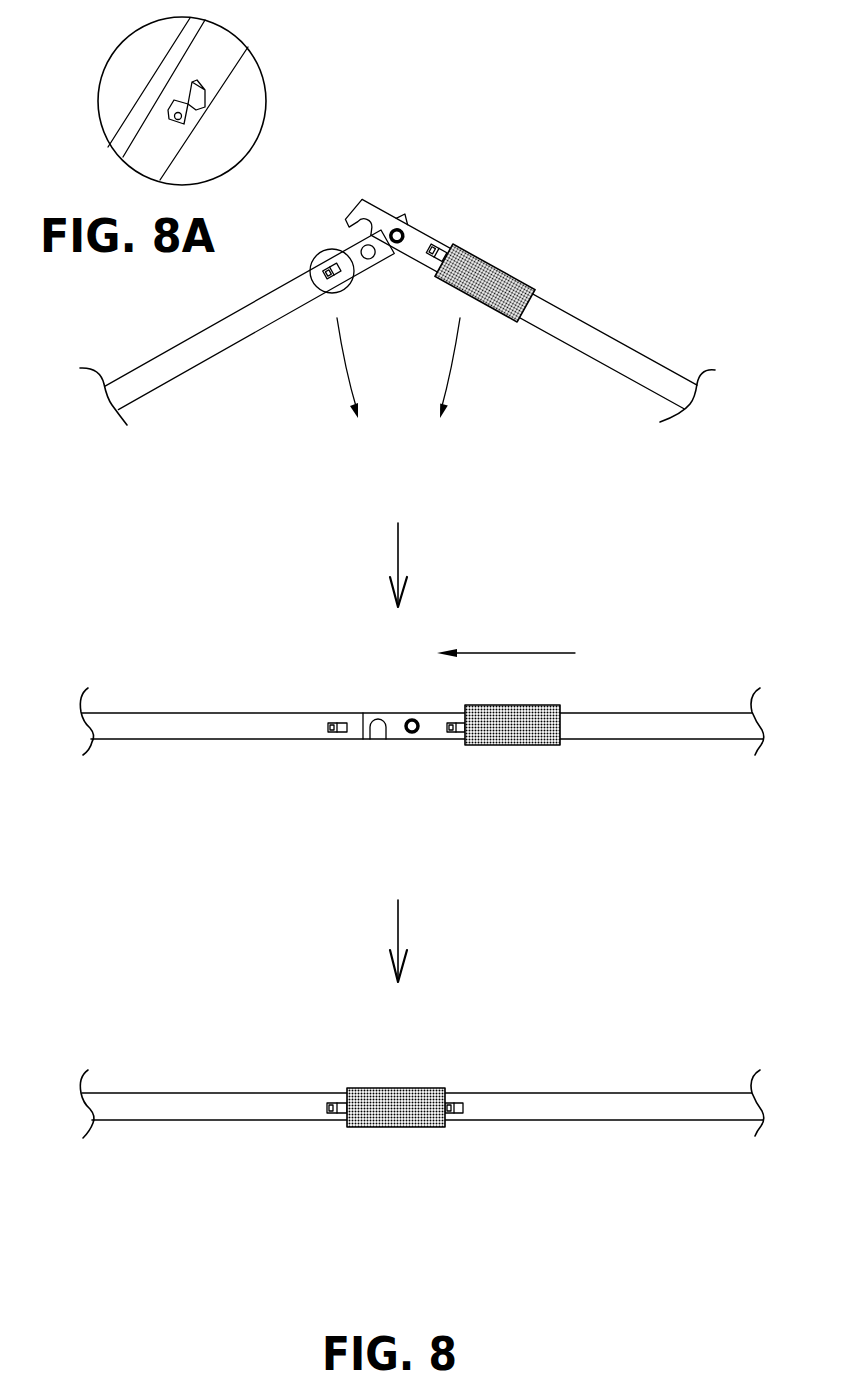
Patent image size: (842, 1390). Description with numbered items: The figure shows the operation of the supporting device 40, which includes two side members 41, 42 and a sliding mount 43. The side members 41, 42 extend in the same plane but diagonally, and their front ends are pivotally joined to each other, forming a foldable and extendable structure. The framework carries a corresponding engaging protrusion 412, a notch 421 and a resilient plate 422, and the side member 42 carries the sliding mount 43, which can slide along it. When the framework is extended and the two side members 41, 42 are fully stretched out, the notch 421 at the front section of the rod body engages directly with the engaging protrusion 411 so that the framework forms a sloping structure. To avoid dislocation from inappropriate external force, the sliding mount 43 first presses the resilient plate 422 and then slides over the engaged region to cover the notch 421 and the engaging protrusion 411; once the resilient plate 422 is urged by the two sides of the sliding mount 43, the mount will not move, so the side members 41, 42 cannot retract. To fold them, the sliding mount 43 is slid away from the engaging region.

The supporting device 40 is at (432, 203).
The side member 41 is at (260, 318).
The side member 42 is at (590, 328).
The sliding mount 43 is at (513, 277).
The engaging protrusion 411 is at (372, 262).
The engaging protrusion 412 is at (310, 272).
The notch 421 is at (356, 212).
The resilient plate 422 is at (442, 243).